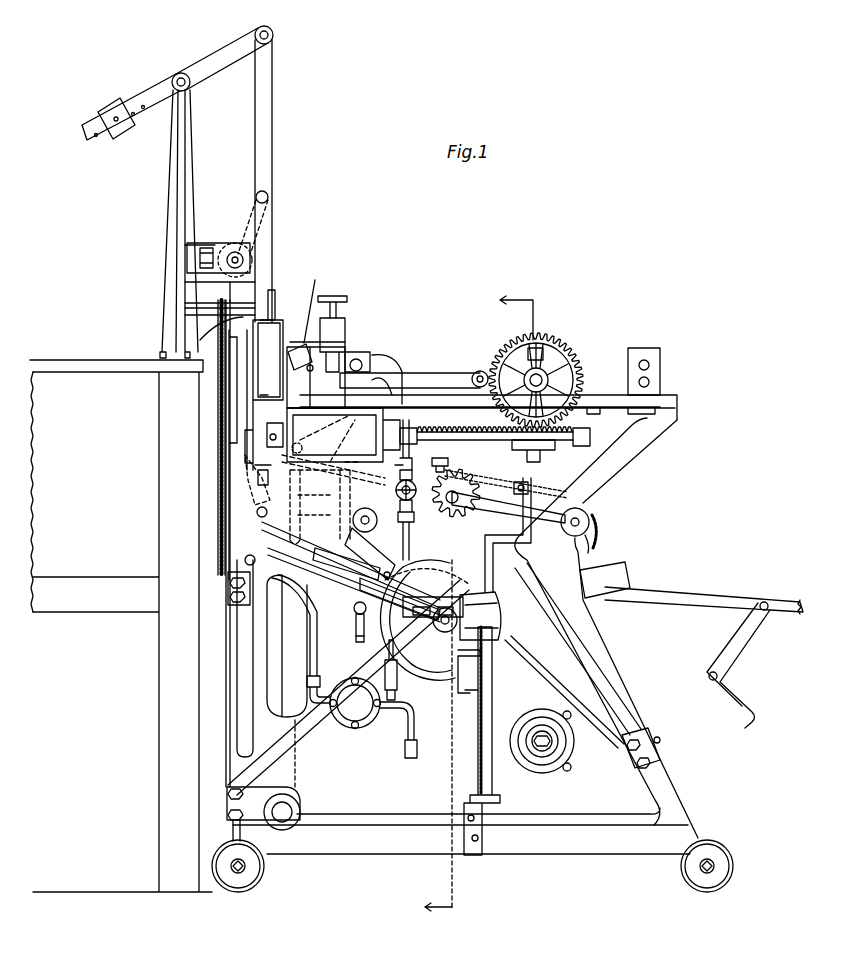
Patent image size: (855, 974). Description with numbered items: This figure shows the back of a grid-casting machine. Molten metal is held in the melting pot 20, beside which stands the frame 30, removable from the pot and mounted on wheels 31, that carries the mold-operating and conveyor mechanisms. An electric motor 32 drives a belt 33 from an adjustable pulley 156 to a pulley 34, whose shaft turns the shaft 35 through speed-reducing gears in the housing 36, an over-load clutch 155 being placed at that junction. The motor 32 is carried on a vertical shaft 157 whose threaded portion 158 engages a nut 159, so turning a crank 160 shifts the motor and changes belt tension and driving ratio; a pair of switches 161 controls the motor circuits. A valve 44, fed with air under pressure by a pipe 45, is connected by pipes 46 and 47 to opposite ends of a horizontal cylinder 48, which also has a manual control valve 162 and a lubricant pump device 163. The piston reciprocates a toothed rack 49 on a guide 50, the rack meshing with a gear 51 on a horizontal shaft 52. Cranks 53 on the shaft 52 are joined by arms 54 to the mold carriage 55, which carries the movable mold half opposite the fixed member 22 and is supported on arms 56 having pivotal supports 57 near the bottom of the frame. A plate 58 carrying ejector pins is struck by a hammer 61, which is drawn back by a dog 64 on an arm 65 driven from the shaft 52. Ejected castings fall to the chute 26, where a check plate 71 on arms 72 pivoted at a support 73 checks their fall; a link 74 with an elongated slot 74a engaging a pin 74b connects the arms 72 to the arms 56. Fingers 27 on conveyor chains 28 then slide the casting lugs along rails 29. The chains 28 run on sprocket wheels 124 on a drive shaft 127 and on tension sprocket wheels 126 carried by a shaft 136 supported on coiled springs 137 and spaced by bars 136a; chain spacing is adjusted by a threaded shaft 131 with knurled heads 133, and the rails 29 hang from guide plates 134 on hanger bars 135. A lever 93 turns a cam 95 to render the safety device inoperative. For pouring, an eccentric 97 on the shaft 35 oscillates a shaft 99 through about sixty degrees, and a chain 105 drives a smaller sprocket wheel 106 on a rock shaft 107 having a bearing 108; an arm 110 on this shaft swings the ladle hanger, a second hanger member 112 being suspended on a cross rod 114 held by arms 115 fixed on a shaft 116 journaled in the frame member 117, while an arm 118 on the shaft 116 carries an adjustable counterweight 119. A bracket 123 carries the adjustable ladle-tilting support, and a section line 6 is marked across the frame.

The section line 6 is at (464, 602).
The melting pot 20 is at (97, 360).
The fixed member 22 is at (281, 320).
The chute 26 is at (575, 692).
The fingers 27 is at (533, 490).
The conveyor chains 28 is at (600, 528).
The rails 29 is at (703, 609).
The frame 30 is at (652, 458).
The wheels 31 is at (252, 878).
The electric motor 32 is at (548, 774).
The belt 33 is at (462, 708).
The pulley 34 is at (428, 663).
The shaft 35 is at (420, 662).
The housing 36 is at (458, 608).
The valve 44 is at (357, 714).
The pipe 45 is at (406, 752).
The pipe 46 is at (320, 658).
The pipe 47 is at (411, 545).
The cylinder 48 is at (330, 405).
The toothed rack 49 is at (575, 433).
The guide or way 50 is at (548, 448).
The gear 51 is at (553, 340).
The horizontal shaft 52 is at (522, 370).
The cranks 53 is at (478, 373).
The arms 54 is at (433, 388).
The mold carriage 55 is at (277, 378).
The arms 56 is at (285, 648).
The pivotal supports 57 is at (288, 810).
The plate 58 is at (332, 300).
The hammer 61 is at (483, 405).
The dog 64 is at (365, 353).
The arm 65 is at (396, 369).
The movable check plate 71 is at (343, 435).
The arms 72 is at (288, 432).
The pivotal support 73 is at (312, 316).
The link 74 is at (333, 499).
The elongated slot 74a is at (321, 513).
The pin 74b is at (321, 495).
The lever 93 is at (356, 641).
The cam 95 is at (356, 622).
The eccentric 97 is at (448, 585).
The shaft 99 is at (250, 555).
The chain 105 is at (215, 457).
The smaller sprocket wheel 106 is at (219, 273).
The rock shaft 107 is at (237, 252).
The bearing 108 is at (210, 248).
The arm 110 is at (252, 218).
The hanger member 112 is at (272, 133).
The cross rod 114 is at (274, 36).
The arms 115 is at (224, 56).
The supporting shaft 116 is at (175, 76).
The frame member 117 is at (170, 183).
The arm 118 is at (90, 140).
The counterweight 119 is at (108, 110).
The bracket 123 is at (205, 293).
The sprocket wheels 124 is at (596, 541).
The sprocket wheels 126 is at (456, 503).
The drive shaft 127 is at (585, 516).
The shaft 131 is at (370, 554).
The knurled heads 133 is at (353, 522).
The guide plates 134 is at (625, 578).
The hanger bars 135 is at (346, 559).
The shaft 136 is at (459, 499).
The bars 136a is at (498, 476).
The coiled springs 137 is at (486, 438).
The over-load clutch 155 is at (397, 620).
The pulley 156 is at (560, 745).
The vertical shaft 157 is at (485, 748).
The threaded portion 158 is at (490, 686).
The nut 159 is at (520, 657).
The manually operable crank 160 is at (528, 518).
The switches 161 is at (661, 371).
The manual control valve 162 is at (411, 503).
The pump device 163 is at (346, 333).